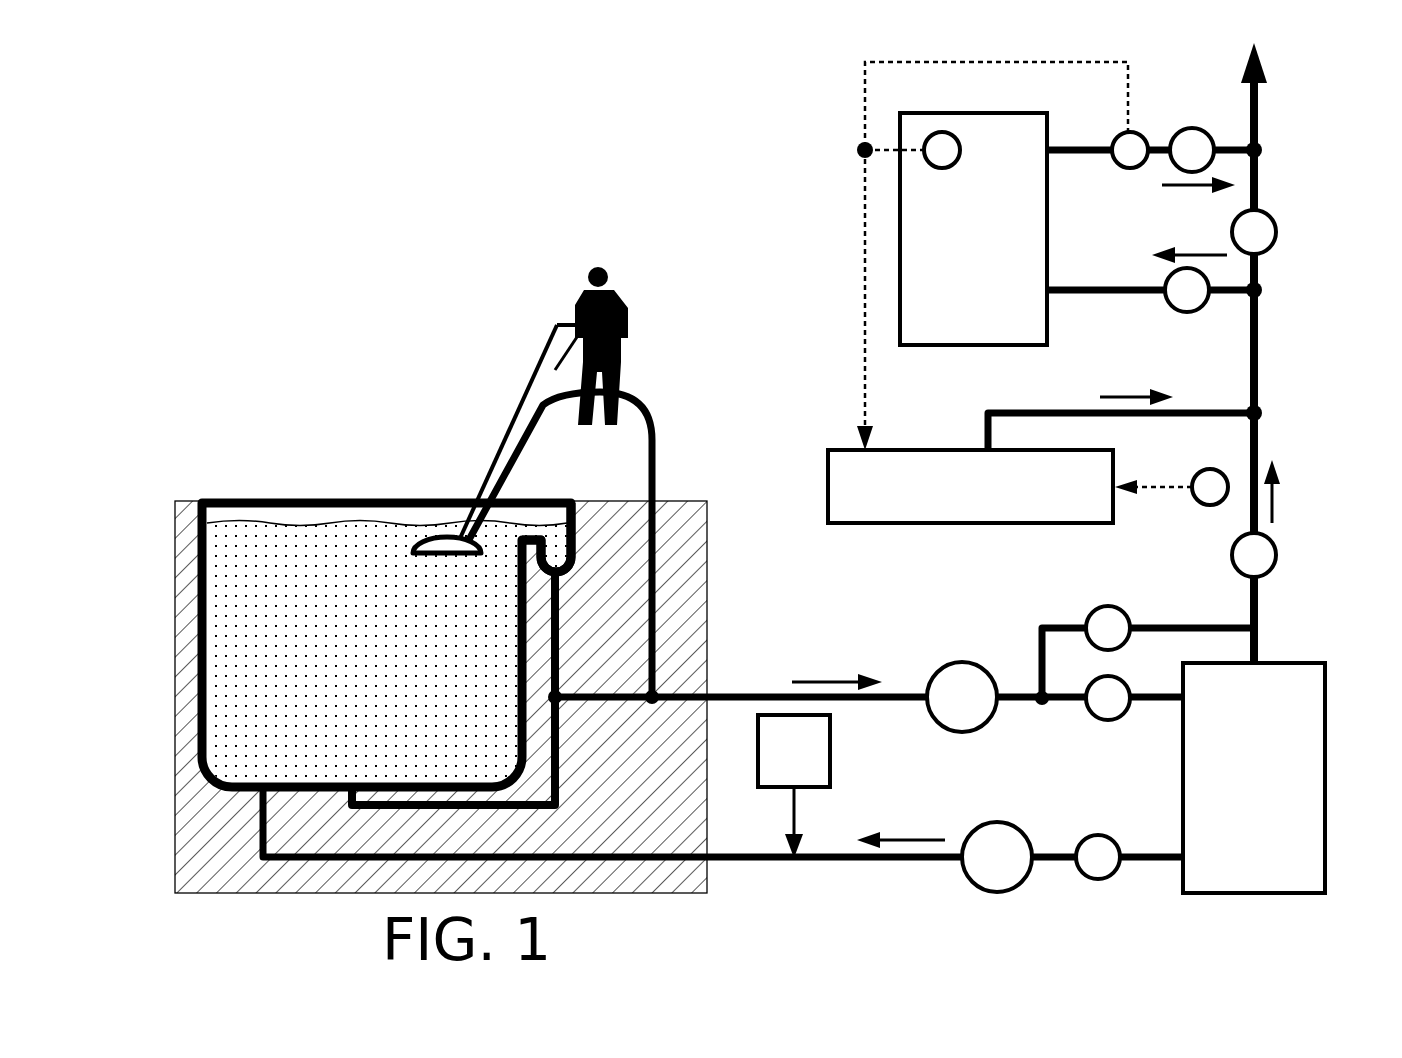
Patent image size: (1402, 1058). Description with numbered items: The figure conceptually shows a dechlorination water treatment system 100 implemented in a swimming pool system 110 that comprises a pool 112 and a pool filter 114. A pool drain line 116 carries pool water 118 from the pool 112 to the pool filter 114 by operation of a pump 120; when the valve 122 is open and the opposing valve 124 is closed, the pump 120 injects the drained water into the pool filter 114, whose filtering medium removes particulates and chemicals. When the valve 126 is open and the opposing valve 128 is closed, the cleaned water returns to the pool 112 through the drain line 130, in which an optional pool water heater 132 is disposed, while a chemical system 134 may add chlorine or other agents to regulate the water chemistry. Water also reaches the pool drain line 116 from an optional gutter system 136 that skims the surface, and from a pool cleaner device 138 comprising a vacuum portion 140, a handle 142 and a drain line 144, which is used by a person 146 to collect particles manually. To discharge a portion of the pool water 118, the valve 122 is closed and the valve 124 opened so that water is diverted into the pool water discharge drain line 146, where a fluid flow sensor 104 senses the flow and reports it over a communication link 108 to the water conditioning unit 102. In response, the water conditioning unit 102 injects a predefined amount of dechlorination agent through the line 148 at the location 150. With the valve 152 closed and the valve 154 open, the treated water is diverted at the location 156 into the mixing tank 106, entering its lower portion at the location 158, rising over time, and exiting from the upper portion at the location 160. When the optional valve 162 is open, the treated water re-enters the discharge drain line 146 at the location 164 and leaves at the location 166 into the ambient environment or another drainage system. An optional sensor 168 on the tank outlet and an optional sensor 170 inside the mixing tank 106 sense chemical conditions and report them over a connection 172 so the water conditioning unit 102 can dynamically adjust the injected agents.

The water treatment system 100 is at (718, 115).
The water conditioning unit 102 is at (1098, 515).
The fluid flow sensor 104 is at (1203, 505).
The mixing tank 106 is at (1031, 338).
The communication link 108 is at (1160, 482).
The swimming pool system 110 is at (418, 150).
The pool 112 is at (375, 763).
The pool filter 114 is at (1311, 888).
The pool drain line 116 is at (750, 697).
The pool water 118 is at (327, 557).
The pump 120 is at (935, 675).
The valve 122 is at (1122, 715).
The valve 124 is at (1100, 605).
The valve 126 is at (1120, 870).
The valve 128 is at (1277, 555).
The drain line 130 is at (863, 857).
The pool water heater 132 is at (1012, 890).
The chemical system 134 is at (830, 751).
The gutter system 136 is at (560, 552).
The pool cleaner device 138 is at (495, 343).
The vacuum portion 140 is at (432, 530).
The handle 142 is at (557, 322).
The drain line 144 is at (697, 443).
The pool water discharge drain line 146 is at (613, 295).
The line 148 is at (1037, 412).
The location 150 is at (1273, 413).
The valve 152 is at (1276, 232).
The valve 154 is at (1183, 312).
The location 156 is at (1273, 290).
The location 158 is at (1050, 300).
The location 160 is at (1050, 142).
The valve 162 is at (1190, 128).
The location 164 is at (1273, 150).
The location 166 is at (1273, 62).
The sensor 168 is at (1125, 170).
The sensor 170 is at (962, 150).
The connection 172 is at (865, 258).